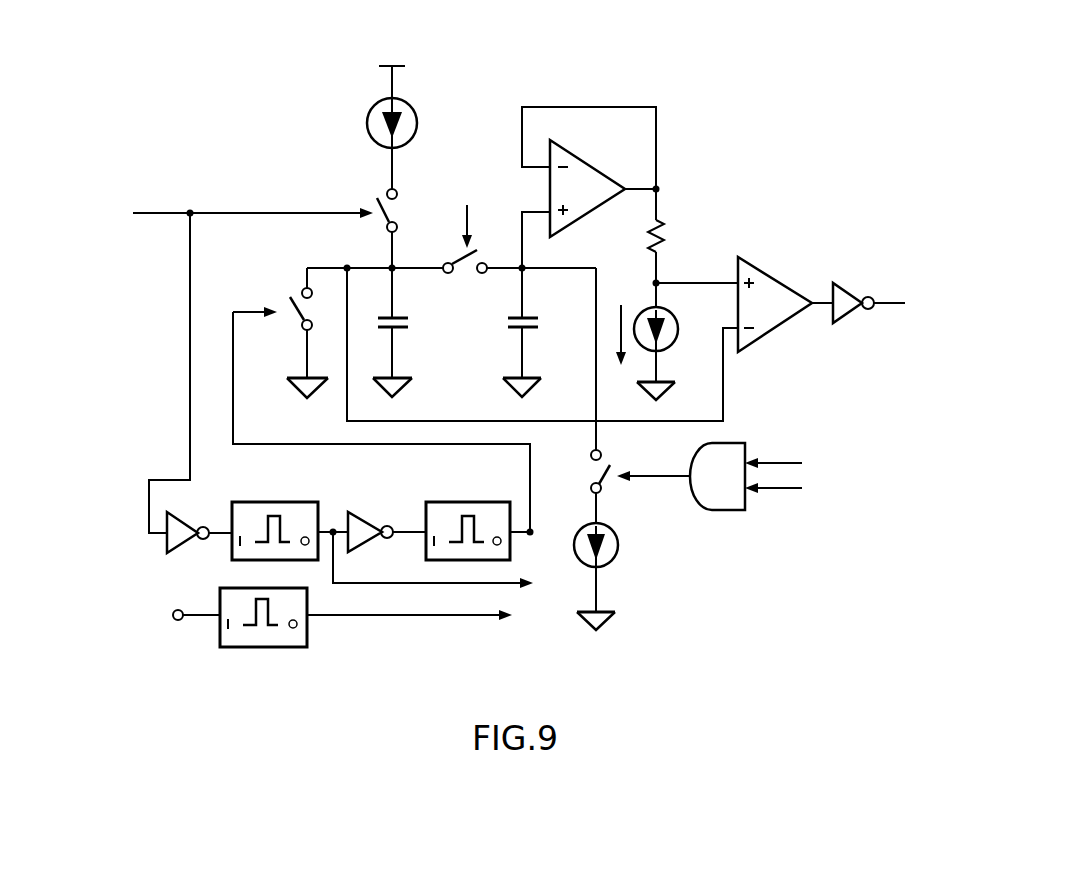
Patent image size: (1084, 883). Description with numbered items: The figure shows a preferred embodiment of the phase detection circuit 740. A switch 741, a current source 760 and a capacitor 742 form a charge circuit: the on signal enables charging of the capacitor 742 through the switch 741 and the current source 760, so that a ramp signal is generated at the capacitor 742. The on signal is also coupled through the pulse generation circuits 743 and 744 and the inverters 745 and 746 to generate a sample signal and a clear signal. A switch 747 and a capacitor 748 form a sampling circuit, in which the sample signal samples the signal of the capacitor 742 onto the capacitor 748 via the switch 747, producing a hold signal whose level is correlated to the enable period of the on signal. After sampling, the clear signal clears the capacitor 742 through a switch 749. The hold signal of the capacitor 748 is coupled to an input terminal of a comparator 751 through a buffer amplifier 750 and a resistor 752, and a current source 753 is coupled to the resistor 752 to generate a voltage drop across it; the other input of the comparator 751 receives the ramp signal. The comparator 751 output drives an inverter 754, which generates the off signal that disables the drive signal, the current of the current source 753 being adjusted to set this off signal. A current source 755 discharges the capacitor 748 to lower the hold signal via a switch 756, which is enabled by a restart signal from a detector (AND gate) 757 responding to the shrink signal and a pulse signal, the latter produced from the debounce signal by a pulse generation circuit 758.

The phase detection circuit 740 is at (890, 53).
The switch 741 is at (422, 193).
The capacitor 742 is at (413, 320).
The pulse generation circuit 743 is at (248, 502).
The pulse generation circuit 744 is at (440, 502).
The inverter 745 is at (183, 545).
The inverter 746 is at (357, 509).
The switch 747 is at (462, 273).
The capacitor 748 is at (541, 320).
The switch 749 is at (288, 320).
The buffer amplifier 750 is at (575, 152).
The comparator 751 is at (757, 263).
The resistor 752 is at (673, 233).
The current source 753 is at (681, 326).
The inverter 754 is at (847, 322).
The current source 755 is at (618, 537).
The switch 756 is at (592, 463).
The detector (AND gate) 757 is at (736, 443).
The pulse generation circuit 758 is at (263, 634).
The current source 760 is at (418, 124).